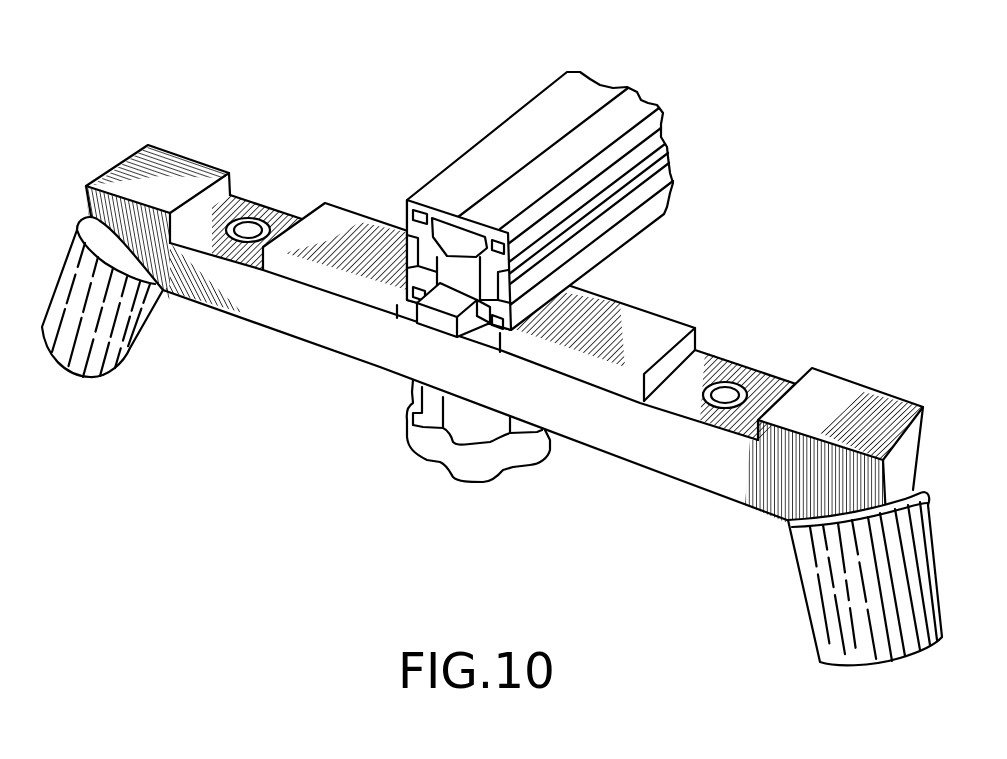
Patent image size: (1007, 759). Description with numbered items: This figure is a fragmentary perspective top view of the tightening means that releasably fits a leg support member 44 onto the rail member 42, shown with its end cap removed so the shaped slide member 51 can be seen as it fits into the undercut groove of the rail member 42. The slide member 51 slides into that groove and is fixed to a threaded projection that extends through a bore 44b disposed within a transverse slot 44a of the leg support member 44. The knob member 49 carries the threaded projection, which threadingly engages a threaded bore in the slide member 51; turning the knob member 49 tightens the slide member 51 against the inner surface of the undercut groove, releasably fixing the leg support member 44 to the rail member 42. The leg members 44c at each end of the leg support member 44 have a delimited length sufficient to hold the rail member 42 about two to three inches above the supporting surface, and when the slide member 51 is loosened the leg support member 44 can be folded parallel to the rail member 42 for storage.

The rail member 42 is at (512, 143).
The leg support member 44 is at (625, 433).
The transverse slot 44a is at (802, 372).
The bore 44b is at (727, 395).
The leg member 44c is at (107, 328).
The knob member 49 is at (480, 463).
The slide member 51 is at (437, 318).